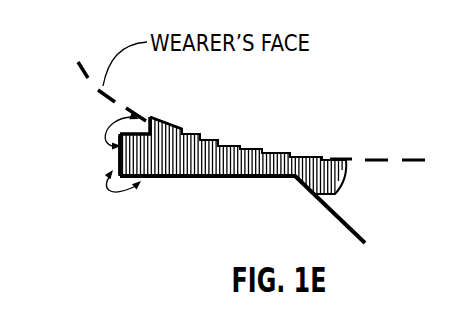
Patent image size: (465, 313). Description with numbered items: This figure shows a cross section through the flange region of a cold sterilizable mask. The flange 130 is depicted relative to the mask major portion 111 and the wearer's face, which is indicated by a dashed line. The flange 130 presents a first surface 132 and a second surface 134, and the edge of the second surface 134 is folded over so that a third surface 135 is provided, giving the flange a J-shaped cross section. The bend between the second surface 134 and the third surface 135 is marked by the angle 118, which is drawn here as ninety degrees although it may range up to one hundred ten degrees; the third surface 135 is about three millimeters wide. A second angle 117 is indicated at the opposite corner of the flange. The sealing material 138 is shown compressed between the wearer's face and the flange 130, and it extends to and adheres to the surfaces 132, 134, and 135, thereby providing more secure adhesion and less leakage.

The mask major portion 111 is at (347, 222).
The lower edge pivot 117 is at (122, 194).
The angle 118 is at (126, 118).
The flange 130 is at (227, 177).
The first surface 132 is at (267, 177).
The second surface 134 is at (115, 146).
The third surface 135 is at (164, 135).
The sealing material 138 is at (223, 193).